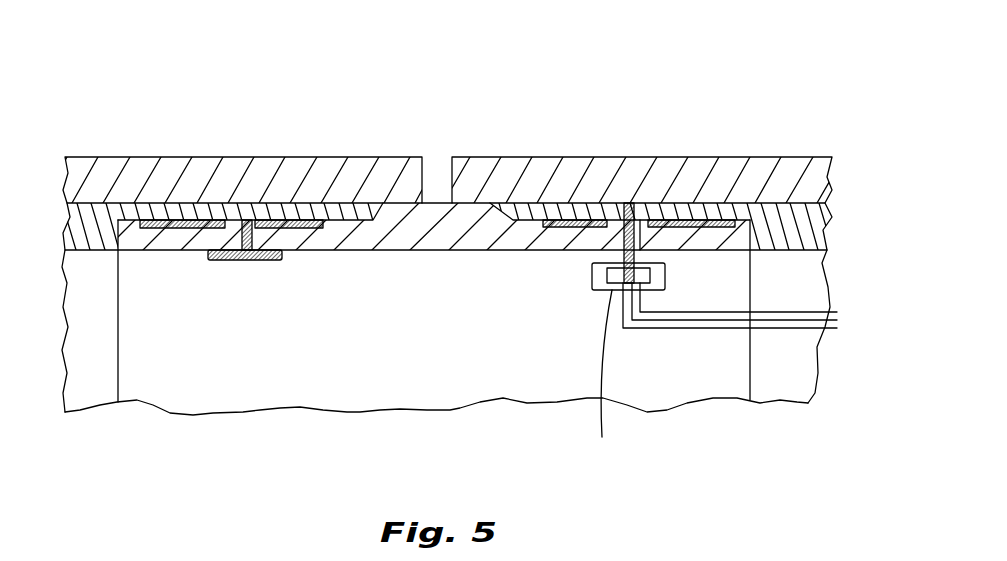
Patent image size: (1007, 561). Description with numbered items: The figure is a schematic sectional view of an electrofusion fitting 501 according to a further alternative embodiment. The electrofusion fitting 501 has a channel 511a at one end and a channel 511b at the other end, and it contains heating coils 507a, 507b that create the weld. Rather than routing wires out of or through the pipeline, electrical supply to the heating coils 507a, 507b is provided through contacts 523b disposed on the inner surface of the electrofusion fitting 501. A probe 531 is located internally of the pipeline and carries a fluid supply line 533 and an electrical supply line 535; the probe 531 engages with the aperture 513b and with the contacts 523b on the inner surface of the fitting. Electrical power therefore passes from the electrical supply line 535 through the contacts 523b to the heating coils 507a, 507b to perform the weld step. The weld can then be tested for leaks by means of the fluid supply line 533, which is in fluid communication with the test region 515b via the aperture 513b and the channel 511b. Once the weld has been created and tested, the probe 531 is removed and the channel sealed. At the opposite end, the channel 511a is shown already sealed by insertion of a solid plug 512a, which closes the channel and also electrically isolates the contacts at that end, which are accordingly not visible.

The electrofusion fitting 501 is at (420, 250).
The heating coil 507a is at (193, 220).
The heating coil 507b is at (563, 220).
The channel 511a is at (250, 220).
The channel 511b is at (636, 218).
The solid plug 512a is at (243, 262).
The aperture 513b is at (590, 268).
The test region 515b is at (626, 190).
The contacts 523b is at (612, 253).
The probe 531 is at (599, 380).
The fluid supply line 533 is at (683, 330).
The electrical supply line 535 is at (667, 312).